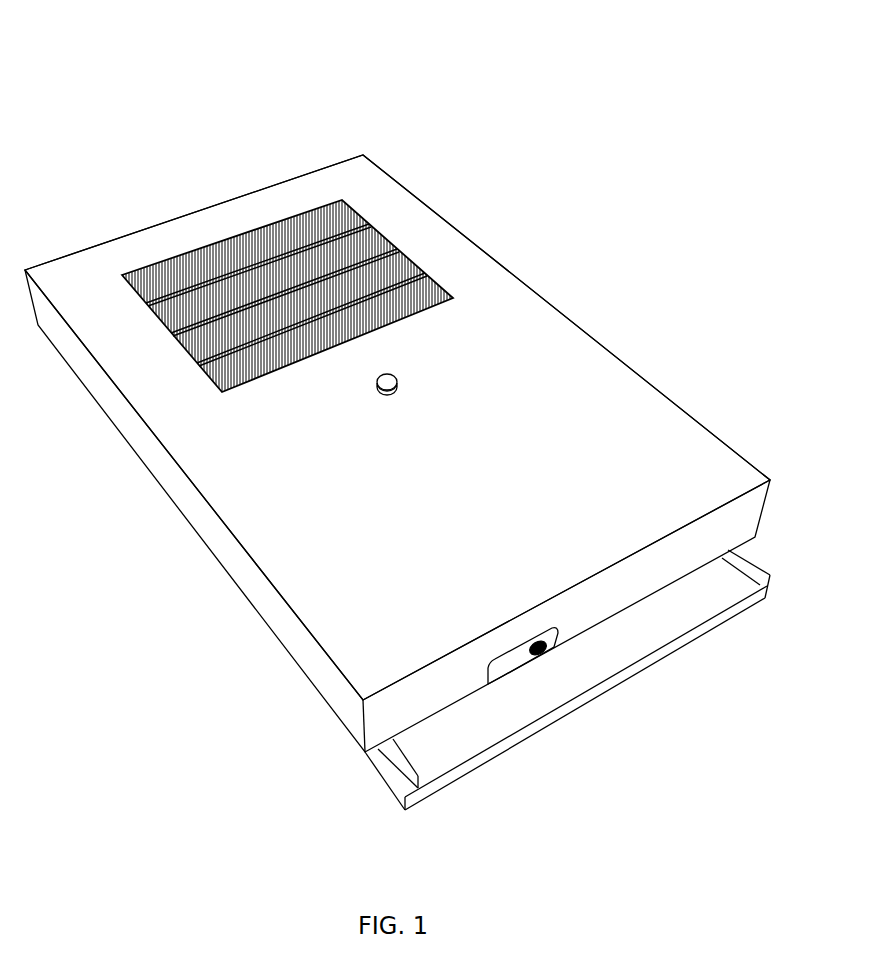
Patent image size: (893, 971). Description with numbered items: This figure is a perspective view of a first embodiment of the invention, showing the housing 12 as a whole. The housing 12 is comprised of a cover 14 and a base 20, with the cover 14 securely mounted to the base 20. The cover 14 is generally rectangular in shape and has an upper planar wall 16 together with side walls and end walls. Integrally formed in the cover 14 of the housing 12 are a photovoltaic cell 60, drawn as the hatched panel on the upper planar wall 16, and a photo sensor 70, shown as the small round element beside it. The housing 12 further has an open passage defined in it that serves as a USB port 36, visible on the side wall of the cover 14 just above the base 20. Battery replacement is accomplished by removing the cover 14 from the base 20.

The housing 12 is at (276, 80).
The cover 14 is at (482, 245).
The upper planar wall 16 is at (613, 405).
The base 20 is at (375, 777).
The USB port 36 is at (503, 665).
The photovoltaic cell 60 is at (213, 345).
The photo sensor 70 is at (383, 393).